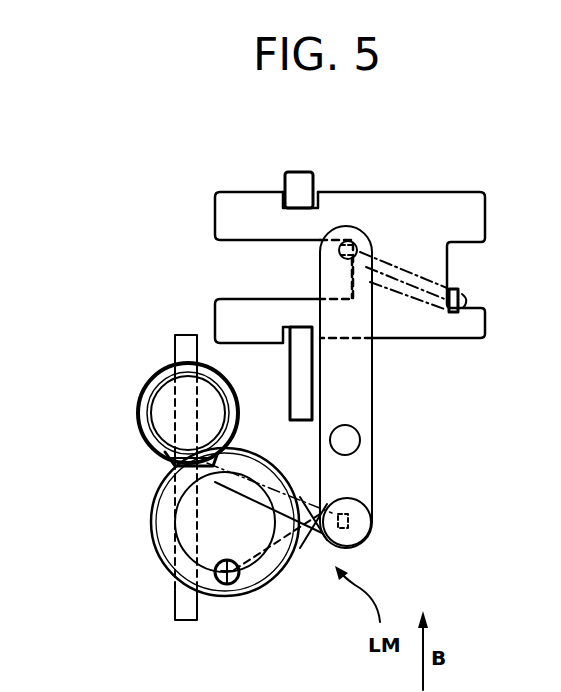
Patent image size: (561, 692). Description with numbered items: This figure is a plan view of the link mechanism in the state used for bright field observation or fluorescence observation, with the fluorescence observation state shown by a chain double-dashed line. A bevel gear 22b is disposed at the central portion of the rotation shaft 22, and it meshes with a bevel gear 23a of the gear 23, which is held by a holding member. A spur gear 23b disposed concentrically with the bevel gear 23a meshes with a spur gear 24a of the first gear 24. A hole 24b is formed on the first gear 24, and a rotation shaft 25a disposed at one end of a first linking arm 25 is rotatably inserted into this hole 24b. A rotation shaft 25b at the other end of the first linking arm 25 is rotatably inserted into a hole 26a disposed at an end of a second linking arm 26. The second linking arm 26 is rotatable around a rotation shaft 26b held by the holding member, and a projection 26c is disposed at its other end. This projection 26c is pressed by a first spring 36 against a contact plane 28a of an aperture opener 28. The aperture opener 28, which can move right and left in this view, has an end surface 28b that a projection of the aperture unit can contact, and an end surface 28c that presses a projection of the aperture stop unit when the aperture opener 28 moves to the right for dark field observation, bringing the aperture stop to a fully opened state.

The rotation shaft 22 is at (177, 600).
The bevel gear 22b is at (152, 447).
The sprocket wheel 23 is at (146, 380).
The bevel gear 23a is at (140, 424).
The spur gear 23b is at (145, 398).
The first gear 24 is at (154, 535).
The spur gear 24a is at (152, 508).
The hole 24b is at (222, 586).
The first linking arm 25 is at (316, 560).
The rotation shaft 25a is at (240, 598).
The rotation shaft 25b is at (351, 530).
The second linking arm 26 is at (375, 380).
The hole 26a is at (372, 518).
The rotation shaft 26b is at (362, 443).
The projection 26c is at (337, 240).
The aperture opener 28 is at (437, 191).
The contact plane 28a is at (322, 271).
The end surface 28b is at (290, 405).
The end surface 28c is at (291, 172).
The first spring 36 is at (458, 290).